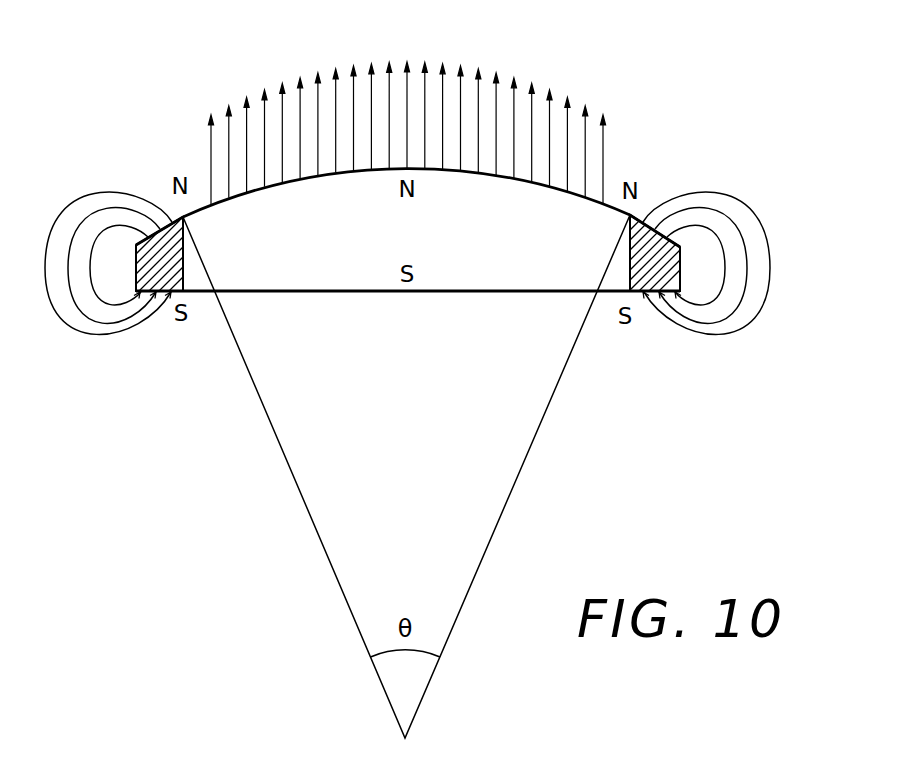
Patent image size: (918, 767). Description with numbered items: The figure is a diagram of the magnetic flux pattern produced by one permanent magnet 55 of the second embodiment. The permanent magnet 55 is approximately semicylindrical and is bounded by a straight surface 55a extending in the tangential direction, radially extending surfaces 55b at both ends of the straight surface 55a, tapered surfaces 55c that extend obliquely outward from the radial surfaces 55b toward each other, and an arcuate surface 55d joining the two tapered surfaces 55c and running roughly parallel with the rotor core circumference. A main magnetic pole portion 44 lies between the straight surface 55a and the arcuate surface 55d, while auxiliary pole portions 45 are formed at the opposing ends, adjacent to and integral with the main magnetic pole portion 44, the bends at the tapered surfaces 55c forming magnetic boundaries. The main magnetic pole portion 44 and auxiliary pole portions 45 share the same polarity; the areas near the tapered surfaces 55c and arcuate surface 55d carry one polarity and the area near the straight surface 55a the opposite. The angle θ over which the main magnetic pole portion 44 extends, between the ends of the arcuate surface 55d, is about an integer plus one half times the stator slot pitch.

The main magnetic pole portion 44 is at (331, 243).
The auxiliary pole portions 45 is at (173, 267).
The permanent magnet 55 is at (499, 260).
The straight surface 55a is at (373, 292).
The radially extending surfaces 55b is at (137, 273).
The tapered surfaces 55c is at (172, 218).
The arcuate surface 55d is at (542, 182).